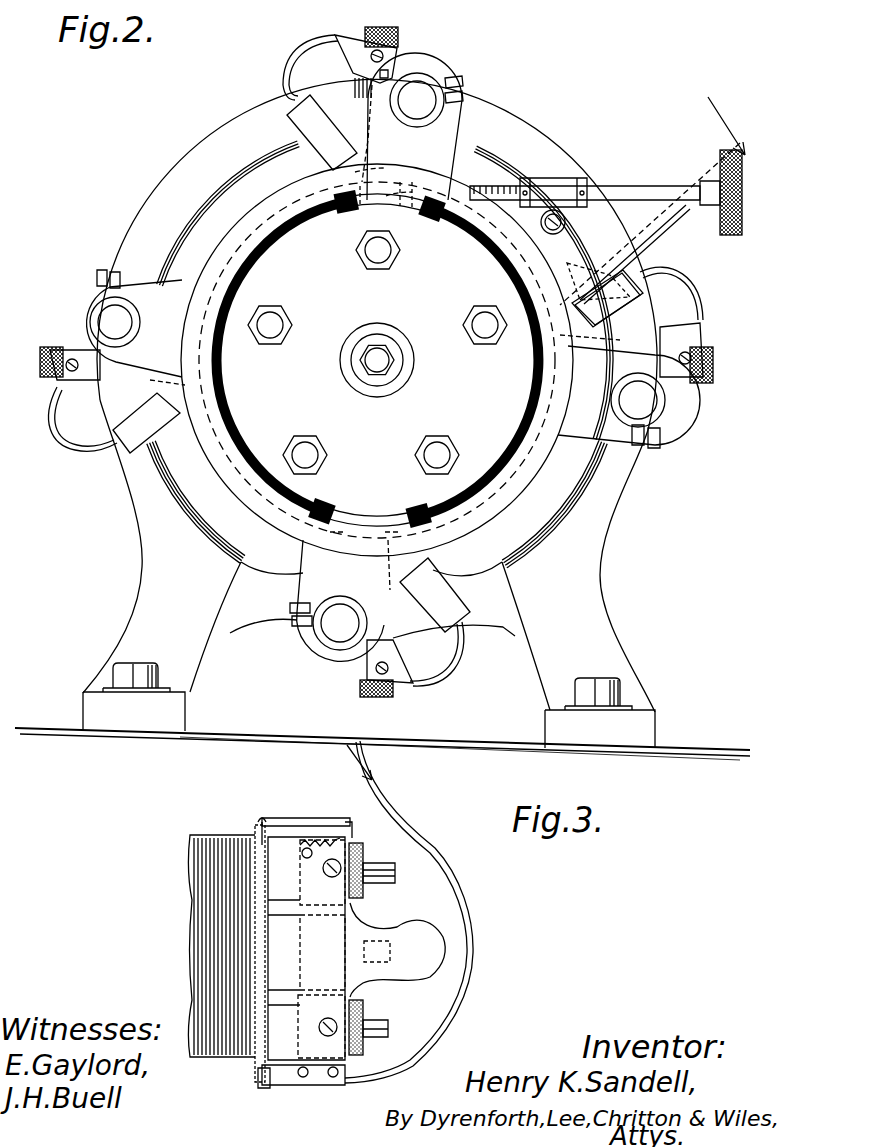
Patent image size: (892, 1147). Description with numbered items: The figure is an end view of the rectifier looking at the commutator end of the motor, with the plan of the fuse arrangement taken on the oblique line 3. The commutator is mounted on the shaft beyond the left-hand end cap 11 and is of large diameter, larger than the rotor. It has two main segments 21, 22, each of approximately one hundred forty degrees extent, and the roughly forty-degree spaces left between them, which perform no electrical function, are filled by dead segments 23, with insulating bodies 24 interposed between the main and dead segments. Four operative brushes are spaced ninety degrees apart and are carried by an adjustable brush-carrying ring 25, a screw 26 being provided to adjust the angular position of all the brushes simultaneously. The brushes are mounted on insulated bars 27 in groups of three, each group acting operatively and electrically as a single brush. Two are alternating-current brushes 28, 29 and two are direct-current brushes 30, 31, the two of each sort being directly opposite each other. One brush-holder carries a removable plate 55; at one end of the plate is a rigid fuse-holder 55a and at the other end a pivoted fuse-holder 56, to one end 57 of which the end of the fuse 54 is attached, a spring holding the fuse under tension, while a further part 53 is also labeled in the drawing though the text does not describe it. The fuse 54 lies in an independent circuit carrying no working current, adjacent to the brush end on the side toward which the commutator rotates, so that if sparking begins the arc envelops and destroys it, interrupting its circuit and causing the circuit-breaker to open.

In FIG. 2, the oblique line 3 is at (737, 126).
In FIG. 2, the end-cap 11 is at (537, 493).
In FIG. 2, the main commutator segment 21 is at (377, 360).
In FIG. 2, the main commutator segment 22 is at (496, 362).
In FIG. 2, the dead segment 23 is at (388, 172).
In FIG. 2, the insulating body 24 is at (420, 178).
In FIG. 2, the adjustable brush-carrying ring 25 is at (163, 295).
In FIG. 2, the screw 26 is at (630, 187).
In FIG. 2, the insulated bar 27 is at (418, 98).
In FIG. 2, the A. C. brush 28 is at (601, 310).
In FIG. 3, the A. C. brush 28 is at (260, 868).
In FIG. 2, the A. C. brush 29 is at (149, 414).
In FIG. 2, the D. C. brush 30 is at (355, 140).
In FIG. 2, the D. C. brush 31 is at (431, 595).
In FIG. 3, the contact piece 53 is at (372, 841).
In FIG. 2, the fuse 54 is at (648, 224).
In FIG. 3, the fuse 54 is at (325, 953).
In FIG. 2, the removable plate 55 is at (641, 254).
In FIG. 3, the removable plate 55 is at (409, 912).
In FIG. 2, the rigid fuse-holder 55a is at (607, 299).
In FIG. 3, the rigid fuse-holder 55a is at (294, 1093).
In FIG. 3, the pivoted fuse-holder 56 is at (312, 825).
In FIG. 3, the end of pivoted fuse-holder 57 is at (262, 822).